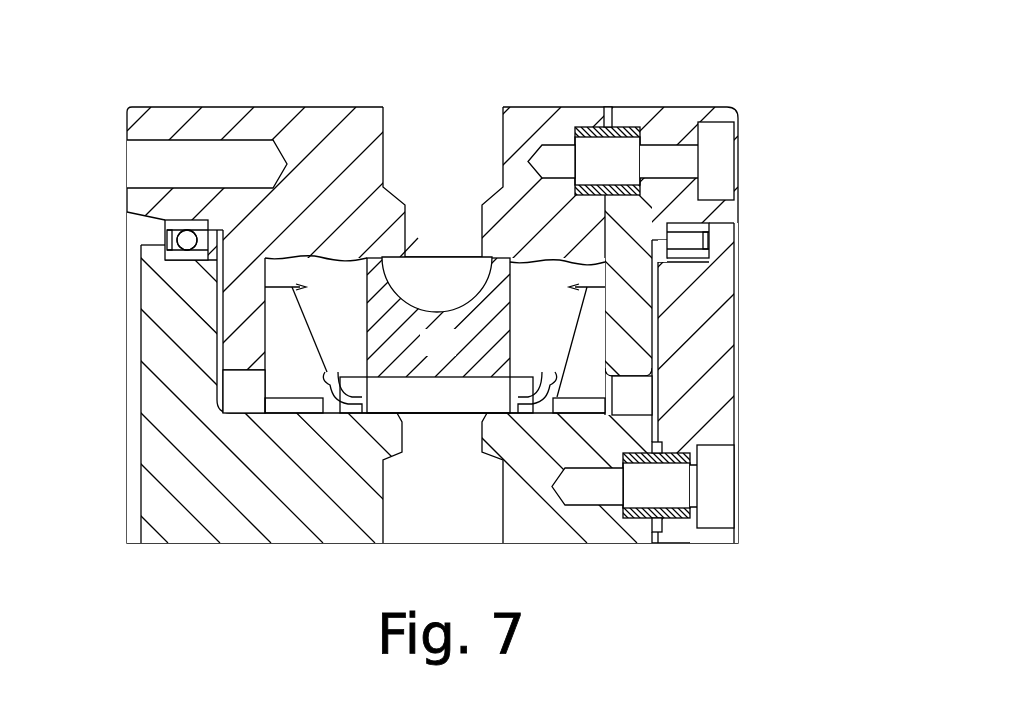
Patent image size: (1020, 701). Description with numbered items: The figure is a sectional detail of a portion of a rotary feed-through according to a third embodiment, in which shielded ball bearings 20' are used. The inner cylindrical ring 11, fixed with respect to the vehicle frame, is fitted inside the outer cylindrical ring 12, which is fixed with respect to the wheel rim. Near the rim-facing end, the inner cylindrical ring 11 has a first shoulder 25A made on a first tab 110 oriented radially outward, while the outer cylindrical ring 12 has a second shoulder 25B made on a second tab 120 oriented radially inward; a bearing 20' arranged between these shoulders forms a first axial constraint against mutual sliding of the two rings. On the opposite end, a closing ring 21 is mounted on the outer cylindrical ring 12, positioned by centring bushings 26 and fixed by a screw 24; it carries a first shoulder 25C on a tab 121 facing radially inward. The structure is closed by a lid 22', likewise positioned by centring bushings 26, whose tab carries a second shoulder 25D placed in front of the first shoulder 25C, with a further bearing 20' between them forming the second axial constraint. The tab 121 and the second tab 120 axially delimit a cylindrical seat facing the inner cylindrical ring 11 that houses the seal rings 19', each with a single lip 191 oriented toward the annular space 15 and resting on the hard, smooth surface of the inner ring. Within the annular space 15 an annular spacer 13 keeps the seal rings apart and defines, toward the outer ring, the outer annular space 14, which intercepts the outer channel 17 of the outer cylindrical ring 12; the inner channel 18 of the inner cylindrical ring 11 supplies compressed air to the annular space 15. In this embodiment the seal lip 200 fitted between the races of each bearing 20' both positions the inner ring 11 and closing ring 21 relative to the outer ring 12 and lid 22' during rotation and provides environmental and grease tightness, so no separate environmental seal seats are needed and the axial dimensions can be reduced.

The inner cylindrical ring 11 is at (242, 510).
The outer cylindrical ring 12 is at (333, 158).
The annular spacer 13 is at (423, 354).
The outer annular space 14 is at (423, 294).
The annular space 15 is at (426, 402).
The outer channel 17 is at (445, 133).
The inner channel 18 is at (458, 523).
The seal ring 19' is at (435, 334).
The lip 191 is at (345, 405).
The bearing 20' is at (434, 287).
The closing ring 21 is at (660, 118).
The lid 22' is at (739, 350).
The screw 24 is at (720, 153).
The first shoulder 25A is at (152, 258).
The second shoulder 25B is at (217, 223).
The first shoulder 25C is at (657, 232).
The second shoulder 25D is at (710, 247).
The centring bushing 26 is at (608, 127).
The first tab 110 is at (188, 310).
The second tab 120 is at (243, 338).
The tab 121 is at (630, 298).
The seal lip 200 is at (166, 238).